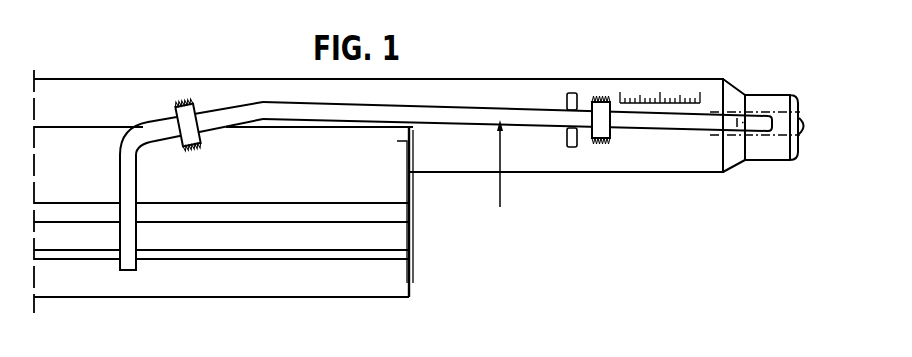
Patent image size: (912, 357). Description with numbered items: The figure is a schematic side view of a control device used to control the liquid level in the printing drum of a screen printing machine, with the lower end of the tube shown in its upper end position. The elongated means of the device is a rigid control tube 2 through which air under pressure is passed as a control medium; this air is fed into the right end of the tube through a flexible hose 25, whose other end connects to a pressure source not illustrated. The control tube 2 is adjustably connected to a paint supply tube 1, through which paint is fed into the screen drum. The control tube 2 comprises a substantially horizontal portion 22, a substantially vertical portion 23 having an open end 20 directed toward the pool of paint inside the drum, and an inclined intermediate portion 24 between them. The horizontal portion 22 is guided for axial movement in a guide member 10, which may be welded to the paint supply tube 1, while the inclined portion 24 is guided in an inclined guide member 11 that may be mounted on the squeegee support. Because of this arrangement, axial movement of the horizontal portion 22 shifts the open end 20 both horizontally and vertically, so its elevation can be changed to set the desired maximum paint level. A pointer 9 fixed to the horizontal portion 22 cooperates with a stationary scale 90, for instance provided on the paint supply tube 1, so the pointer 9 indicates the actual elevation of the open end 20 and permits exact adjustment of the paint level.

The paint supply tube 1 is at (622, 167).
The control tube 2 is at (501, 179).
The pointer 9 is at (700, 113).
The guide member 10 is at (603, 115).
The inclined guide member 11 is at (181, 108).
The open end 20 is at (130, 270).
The horizontal portion 22 is at (527, 118).
The vertical portion 23 is at (128, 253).
The inclined intermediate portion 24 is at (222, 118).
The flexible hose 25 is at (785, 128).
The scale 90 is at (660, 97).